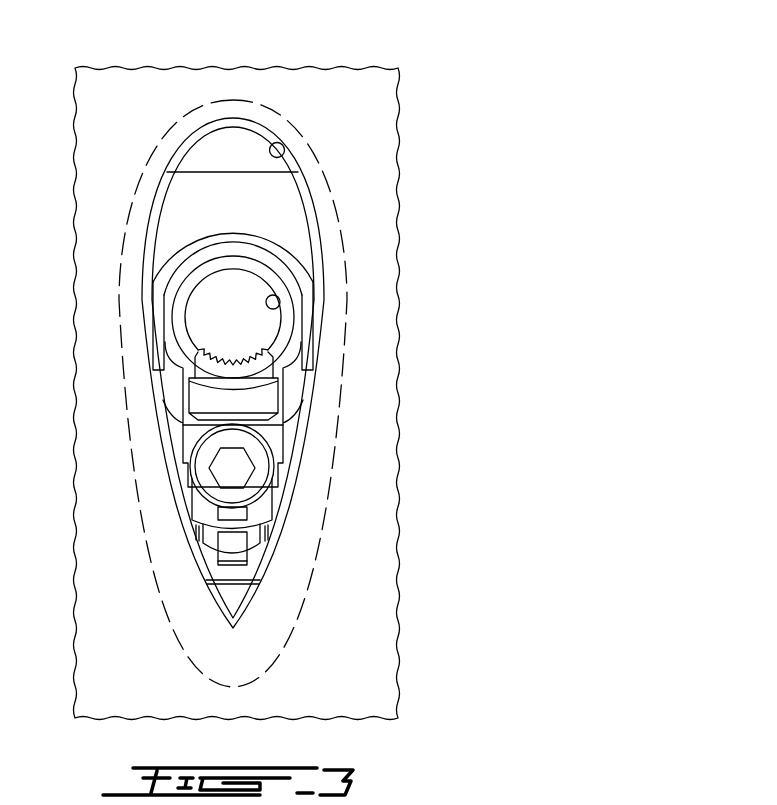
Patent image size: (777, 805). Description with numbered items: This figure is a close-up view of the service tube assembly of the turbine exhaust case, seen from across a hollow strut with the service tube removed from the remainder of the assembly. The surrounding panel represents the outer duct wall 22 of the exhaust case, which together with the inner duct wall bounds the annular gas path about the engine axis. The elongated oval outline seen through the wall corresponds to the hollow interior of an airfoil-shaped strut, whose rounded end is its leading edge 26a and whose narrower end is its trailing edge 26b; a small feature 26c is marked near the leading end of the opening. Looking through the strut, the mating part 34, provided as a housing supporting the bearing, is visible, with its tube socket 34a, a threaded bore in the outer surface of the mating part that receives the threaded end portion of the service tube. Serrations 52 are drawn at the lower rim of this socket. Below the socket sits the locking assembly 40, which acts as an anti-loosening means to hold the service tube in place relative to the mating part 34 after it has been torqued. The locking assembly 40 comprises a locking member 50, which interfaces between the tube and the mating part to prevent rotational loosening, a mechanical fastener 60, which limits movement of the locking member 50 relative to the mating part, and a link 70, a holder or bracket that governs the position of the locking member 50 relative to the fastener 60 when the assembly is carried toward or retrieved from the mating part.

The outer duct wall 22 is at (122, 616).
The leading edge 26a is at (215, 82).
The trailing edge 26b is at (238, 696).
The notch 26c is at (284, 163).
The mating part 34 is at (293, 213).
The tube socket 34a is at (280, 313).
The locking assembly 40 is at (408, 440).
The locking member 50 is at (260, 542).
The teeth 52 is at (197, 355).
The mechanical fastener 60 is at (255, 487).
The link 70 is at (275, 440).